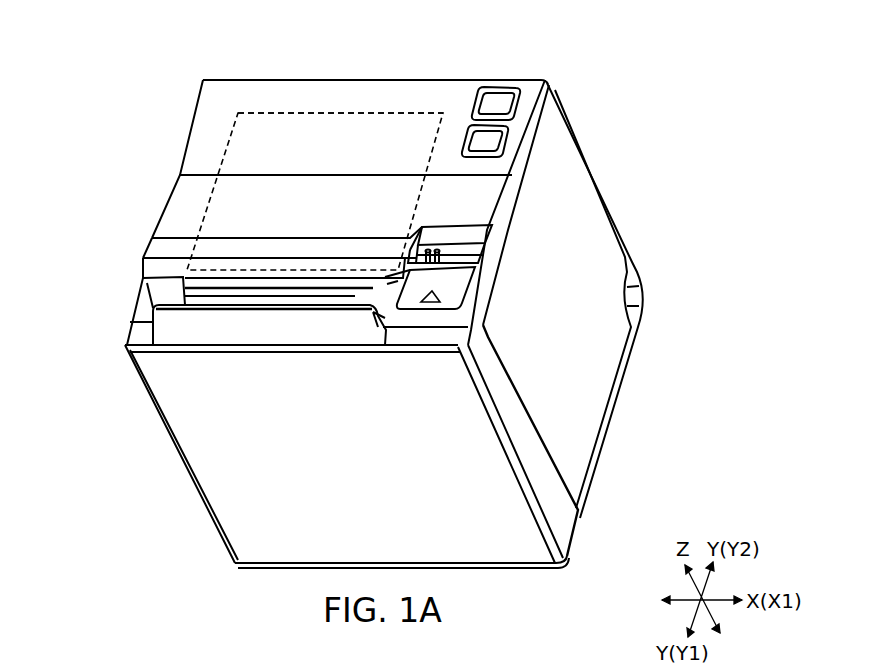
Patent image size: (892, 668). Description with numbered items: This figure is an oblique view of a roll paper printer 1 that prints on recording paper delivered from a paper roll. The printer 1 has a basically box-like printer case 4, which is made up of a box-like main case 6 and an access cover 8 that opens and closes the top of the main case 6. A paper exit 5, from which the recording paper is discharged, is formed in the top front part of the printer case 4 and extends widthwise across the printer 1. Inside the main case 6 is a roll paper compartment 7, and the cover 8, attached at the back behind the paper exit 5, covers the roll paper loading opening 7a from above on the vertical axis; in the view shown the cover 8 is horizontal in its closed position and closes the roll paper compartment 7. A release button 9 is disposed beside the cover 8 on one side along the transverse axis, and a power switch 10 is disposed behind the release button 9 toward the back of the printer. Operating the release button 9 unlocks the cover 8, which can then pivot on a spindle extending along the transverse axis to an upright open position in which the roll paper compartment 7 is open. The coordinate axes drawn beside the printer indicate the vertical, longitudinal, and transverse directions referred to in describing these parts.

The printer 1 is at (376, 296).
The printer case 4 is at (158, 135).
The paper exit 5 is at (233, 300).
The main case 6 is at (582, 380).
The roll paper compartment 7 is at (391, 151).
The roll paper loading opening 7a is at (368, 110).
The cover 8 is at (214, 135).
The release button 9 is at (450, 285).
The power switch 10 is at (487, 135).